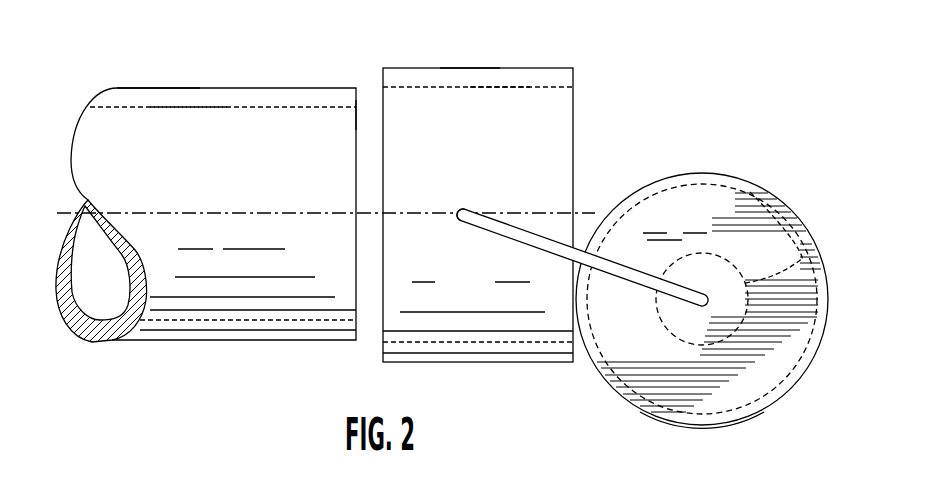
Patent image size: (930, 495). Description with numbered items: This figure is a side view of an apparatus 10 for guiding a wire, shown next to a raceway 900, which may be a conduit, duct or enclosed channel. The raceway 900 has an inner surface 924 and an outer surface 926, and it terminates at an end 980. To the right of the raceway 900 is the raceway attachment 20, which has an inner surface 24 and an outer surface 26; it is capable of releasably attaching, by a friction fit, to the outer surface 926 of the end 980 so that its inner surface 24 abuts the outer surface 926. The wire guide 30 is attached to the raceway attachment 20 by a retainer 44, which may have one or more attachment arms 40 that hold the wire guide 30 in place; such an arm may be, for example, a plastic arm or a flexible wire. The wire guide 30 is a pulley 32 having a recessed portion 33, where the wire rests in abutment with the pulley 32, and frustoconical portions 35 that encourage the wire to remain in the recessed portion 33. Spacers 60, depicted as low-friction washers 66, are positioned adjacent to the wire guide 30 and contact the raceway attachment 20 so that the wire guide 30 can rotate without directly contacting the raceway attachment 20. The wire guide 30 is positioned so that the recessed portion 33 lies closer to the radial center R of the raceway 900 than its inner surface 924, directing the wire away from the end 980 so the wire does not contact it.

The apparatus for guiding a wire 10 is at (633, 80).
The raceway attachment 20 is at (413, 78).
The inner surface 24 is at (498, 88).
The outer surface 26 is at (463, 69).
The wire guide 30 is at (757, 376).
The pulley 32 is at (753, 193).
The recessed portion 33 is at (803, 250).
The frustoconical portions 35 is at (795, 215).
The attachment arms 40 is at (474, 224).
The retainer 44 is at (510, 230).
The spacers 60 is at (690, 173).
The washers 66 is at (703, 426).
The raceway 900 is at (212, 117).
The inner surface 924 is at (178, 108).
The outer surface 926 is at (143, 87).
The end 980 is at (356, 120).
The radial center R is at (72, 213).